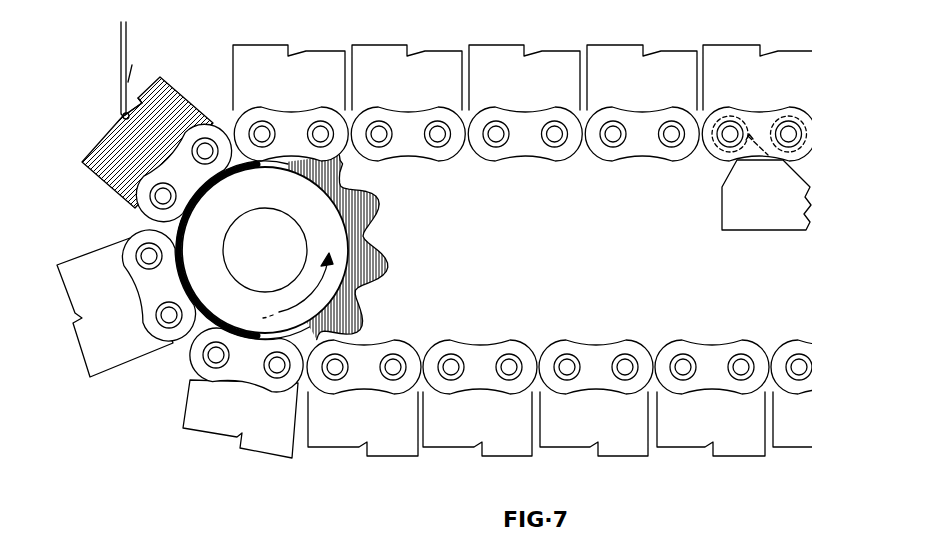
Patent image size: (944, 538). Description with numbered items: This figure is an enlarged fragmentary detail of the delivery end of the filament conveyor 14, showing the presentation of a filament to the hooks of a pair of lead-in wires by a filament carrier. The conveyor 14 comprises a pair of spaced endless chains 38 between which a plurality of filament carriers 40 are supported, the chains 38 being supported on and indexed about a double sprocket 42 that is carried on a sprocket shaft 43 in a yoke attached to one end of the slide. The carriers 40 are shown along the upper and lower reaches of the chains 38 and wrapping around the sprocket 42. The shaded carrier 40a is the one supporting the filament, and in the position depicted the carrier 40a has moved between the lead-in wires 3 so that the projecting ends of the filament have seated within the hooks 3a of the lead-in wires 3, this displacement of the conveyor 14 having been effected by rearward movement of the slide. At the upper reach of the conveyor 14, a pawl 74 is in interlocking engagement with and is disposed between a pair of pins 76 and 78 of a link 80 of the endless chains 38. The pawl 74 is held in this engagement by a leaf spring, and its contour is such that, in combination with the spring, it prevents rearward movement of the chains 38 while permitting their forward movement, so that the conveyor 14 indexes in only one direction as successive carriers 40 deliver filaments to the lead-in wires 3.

The lead-in wires 3 is at (128, 46).
The hooks 3a is at (143, 97).
The filament conveyor 14 is at (178, 82).
The endless chains 38 is at (605, 163).
The filament carriers 40 is at (283, 28).
The shaded carrier 40a is at (200, 105).
The double sprocket 42 is at (368, 213).
The sprocket shaft 43 is at (280, 222).
The pawl 74 is at (727, 207).
The pin 76 is at (732, 127).
The pin 78 is at (787, 127).
The link 80 is at (759, 122).